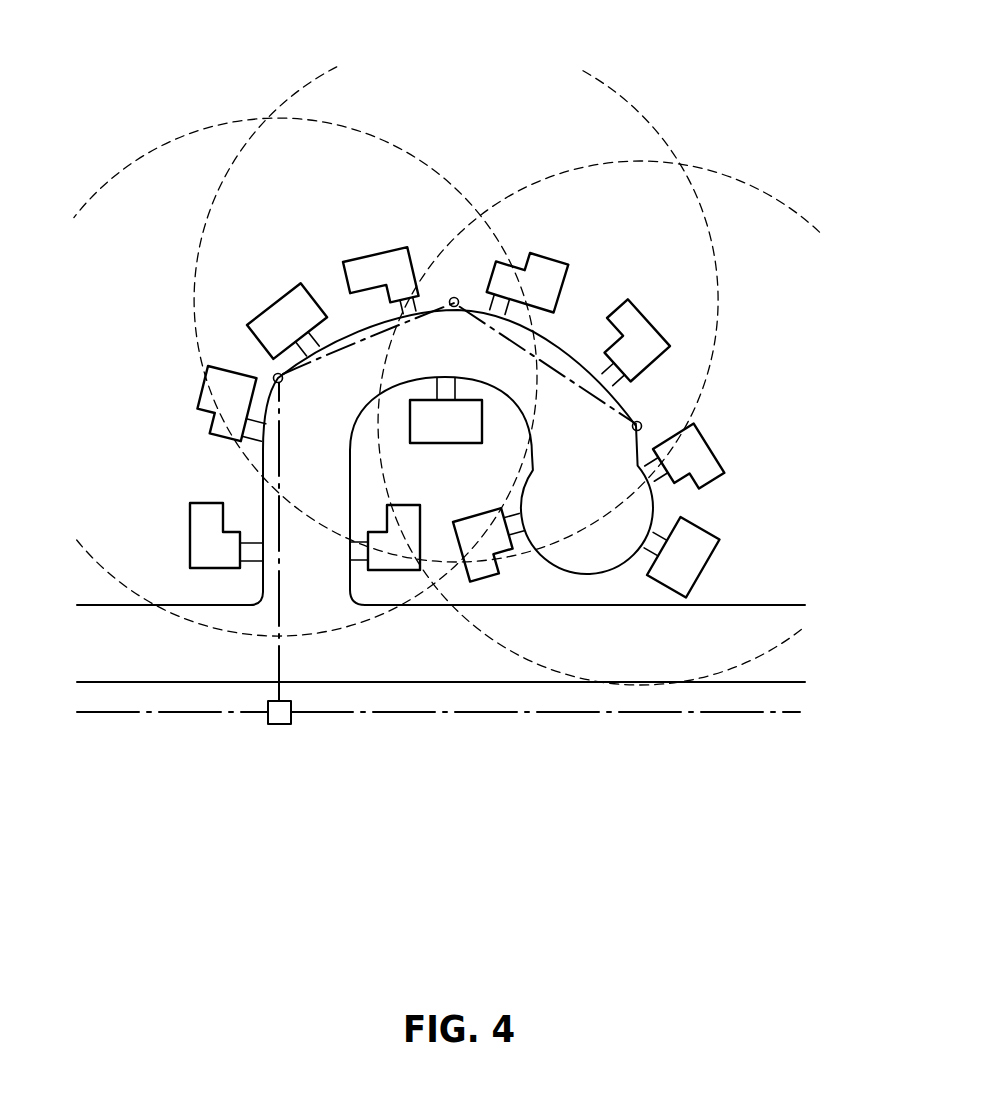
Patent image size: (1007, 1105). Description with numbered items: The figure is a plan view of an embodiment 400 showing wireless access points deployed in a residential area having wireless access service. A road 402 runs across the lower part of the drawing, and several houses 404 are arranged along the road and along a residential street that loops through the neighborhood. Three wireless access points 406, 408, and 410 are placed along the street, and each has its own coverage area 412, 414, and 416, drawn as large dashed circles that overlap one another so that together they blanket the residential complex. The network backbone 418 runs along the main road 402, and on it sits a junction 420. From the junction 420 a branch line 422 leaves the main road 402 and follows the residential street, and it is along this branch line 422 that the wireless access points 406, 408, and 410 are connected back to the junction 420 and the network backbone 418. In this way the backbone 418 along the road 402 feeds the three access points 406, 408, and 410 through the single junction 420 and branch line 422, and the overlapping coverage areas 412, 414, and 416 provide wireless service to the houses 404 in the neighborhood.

The embodiment 400 is at (440, 515).
The road 402 is at (688, 662).
The houses 404 is at (758, 480).
The wireless access point 406 is at (275, 374).
The wireless access point 408 is at (452, 290).
The wireless access point 410 is at (644, 424).
The coverage area 412 is at (168, 141).
The coverage area 414 is at (680, 130).
The coverage area 416 is at (717, 680).
The network backbone 418 is at (167, 714).
The junction 420 is at (291, 715).
The branch line 422 is at (281, 594).